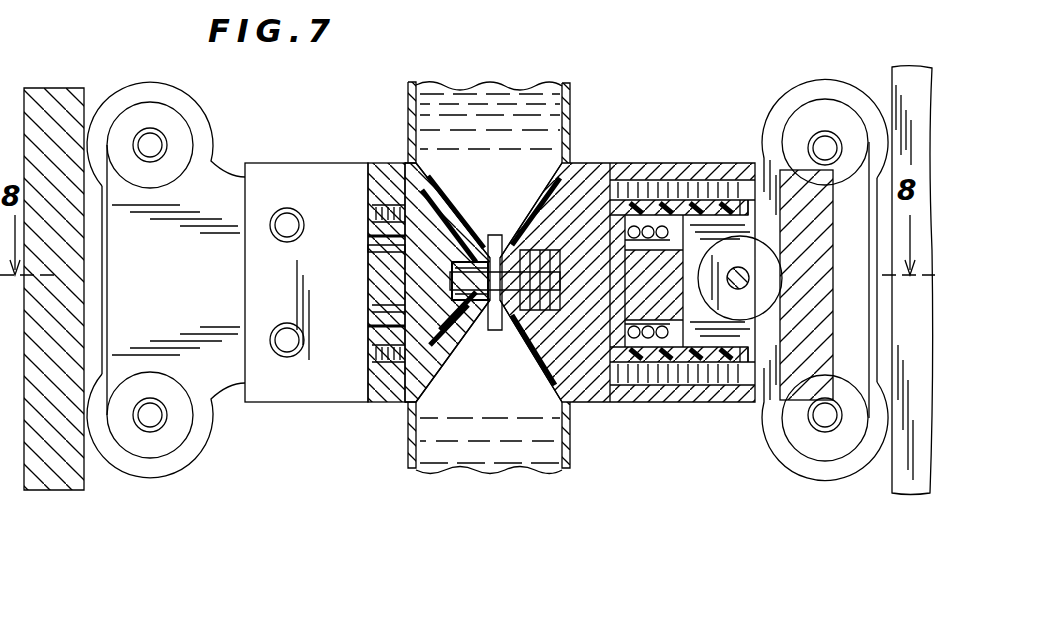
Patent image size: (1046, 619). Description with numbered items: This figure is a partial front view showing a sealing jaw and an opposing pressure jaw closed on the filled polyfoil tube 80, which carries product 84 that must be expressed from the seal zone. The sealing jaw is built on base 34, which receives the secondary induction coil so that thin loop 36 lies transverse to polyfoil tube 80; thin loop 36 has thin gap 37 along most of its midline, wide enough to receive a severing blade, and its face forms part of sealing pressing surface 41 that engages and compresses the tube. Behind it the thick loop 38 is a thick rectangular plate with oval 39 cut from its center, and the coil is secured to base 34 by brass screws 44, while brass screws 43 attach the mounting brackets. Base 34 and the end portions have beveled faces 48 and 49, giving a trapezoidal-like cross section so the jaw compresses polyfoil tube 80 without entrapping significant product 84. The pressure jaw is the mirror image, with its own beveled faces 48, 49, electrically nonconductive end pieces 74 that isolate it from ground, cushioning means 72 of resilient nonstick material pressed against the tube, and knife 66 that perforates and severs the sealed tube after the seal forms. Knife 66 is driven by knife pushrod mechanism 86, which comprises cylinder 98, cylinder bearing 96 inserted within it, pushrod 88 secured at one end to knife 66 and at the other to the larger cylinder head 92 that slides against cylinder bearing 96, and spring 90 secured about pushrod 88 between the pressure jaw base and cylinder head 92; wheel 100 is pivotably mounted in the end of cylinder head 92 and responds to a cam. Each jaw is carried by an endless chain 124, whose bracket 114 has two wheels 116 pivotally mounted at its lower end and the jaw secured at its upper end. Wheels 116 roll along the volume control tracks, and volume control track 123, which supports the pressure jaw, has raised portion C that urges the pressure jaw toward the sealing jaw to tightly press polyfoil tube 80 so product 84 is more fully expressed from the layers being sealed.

The endless chain 124 is at (56, 78).
The volume control track 123 is at (892, 68).
The wheel 116 is at (151, 84).
The bracket 114 is at (215, 385).
The base 34 is at (390, 268).
The brass screw 43 is at (291, 212).
The thick loop 38 is at (376, 170).
The thin loop 36 is at (395, 234).
The thin gap 37 is at (388, 249).
The oval 39 is at (380, 308).
The brass screw 44 is at (385, 206).
The beveled face 48 is at (425, 175).
The beveled face 49 is at (415, 408).
The sealing pressing surface 41 is at (491, 252).
The knife 66 is at (494, 345).
The cushioning means 72 is at (508, 240).
The end piece 74 is at (580, 165).
The polyfoil tube 80 is at (408, 96).
The product 84 is at (467, 95).
The knife pushrod mechanism 86 is at (655, 135).
The pushrod 88 is at (610, 210).
The spring 90 is at (648, 395).
The cylinder head 92 is at (731, 402).
The cylinder bearing 96 is at (702, 402).
The cylinder 98 is at (628, 402).
The wheel 100 is at (718, 255).
The raised portion C is at (834, 236).